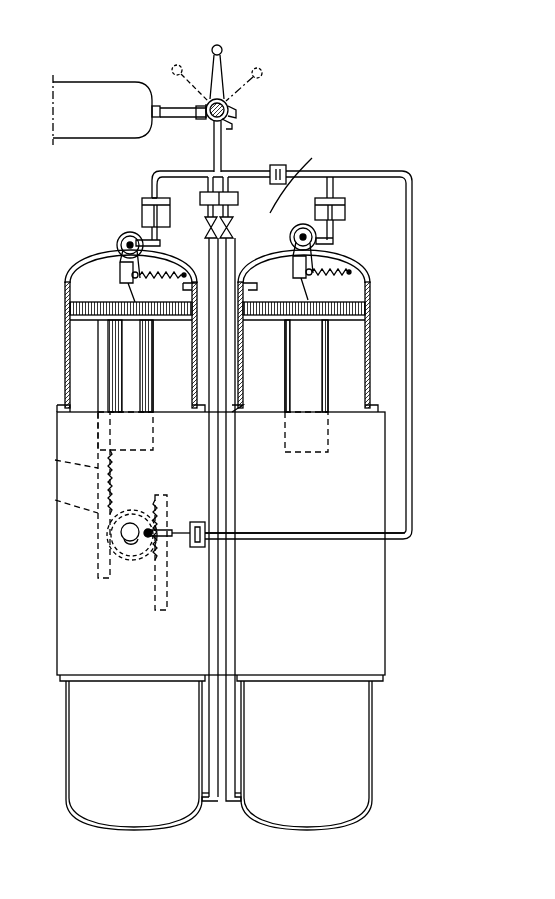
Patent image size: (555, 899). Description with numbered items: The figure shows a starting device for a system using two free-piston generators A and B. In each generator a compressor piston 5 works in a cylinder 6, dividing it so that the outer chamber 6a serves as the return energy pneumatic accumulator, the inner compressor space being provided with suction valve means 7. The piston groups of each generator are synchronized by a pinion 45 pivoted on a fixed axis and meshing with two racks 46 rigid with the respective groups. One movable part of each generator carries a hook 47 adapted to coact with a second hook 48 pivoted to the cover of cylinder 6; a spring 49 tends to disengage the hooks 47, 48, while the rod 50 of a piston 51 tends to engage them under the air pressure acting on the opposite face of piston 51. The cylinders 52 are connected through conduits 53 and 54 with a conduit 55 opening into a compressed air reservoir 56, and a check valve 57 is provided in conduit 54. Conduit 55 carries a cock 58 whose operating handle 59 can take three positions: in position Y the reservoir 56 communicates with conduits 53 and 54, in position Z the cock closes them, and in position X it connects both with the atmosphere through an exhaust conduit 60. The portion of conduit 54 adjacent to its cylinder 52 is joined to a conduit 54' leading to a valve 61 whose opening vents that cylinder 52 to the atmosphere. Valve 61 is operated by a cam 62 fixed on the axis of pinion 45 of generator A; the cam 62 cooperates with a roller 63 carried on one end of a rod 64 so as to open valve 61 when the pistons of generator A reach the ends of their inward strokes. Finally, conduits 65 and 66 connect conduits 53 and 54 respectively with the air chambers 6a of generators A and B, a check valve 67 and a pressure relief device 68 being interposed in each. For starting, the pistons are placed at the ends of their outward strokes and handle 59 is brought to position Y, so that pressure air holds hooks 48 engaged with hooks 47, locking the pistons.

The compressed air reservoir 56 is at (105, 107).
The conduit 55 is at (173, 108).
The cock 58 is at (236, 112).
The handle 59 is at (219, 83).
The exhaust conduit 60 is at (232, 124).
The conduit 53 is at (200, 172).
The conduit 54 is at (355, 338).
The conduit 54' is at (331, 475).
The check valve 57 is at (287, 169).
The piston 51 is at (152, 192).
The cylinder 52 is at (145, 204).
The rod 50 is at (150, 232).
The check valve 67 is at (203, 198).
The pressure relief device 68 is at (207, 224).
The hook 48 is at (118, 248).
The hook 47 is at (125, 295).
The spring 49 is at (172, 270).
The outer chamber 6a is at (86, 292).
The cylinder 6 is at (66, 305).
The compressor piston 5 is at (72, 315).
The suction valve means 7 is at (122, 355).
The conduit 65 is at (213, 347).
The conduit 66 is at (235, 448).
The rack 46 is at (98, 468).
The pinion 45 is at (55, 499).
The cam 62 is at (125, 545).
The roller 63 is at (149, 530).
The rod 64 is at (170, 527).
The valve 61 is at (197, 522).
The position X is at (173, 46).
The position Y is at (216, 26).
The position Z is at (261, 51).
The generator A is at (127, 811).
The generator B is at (297, 811).